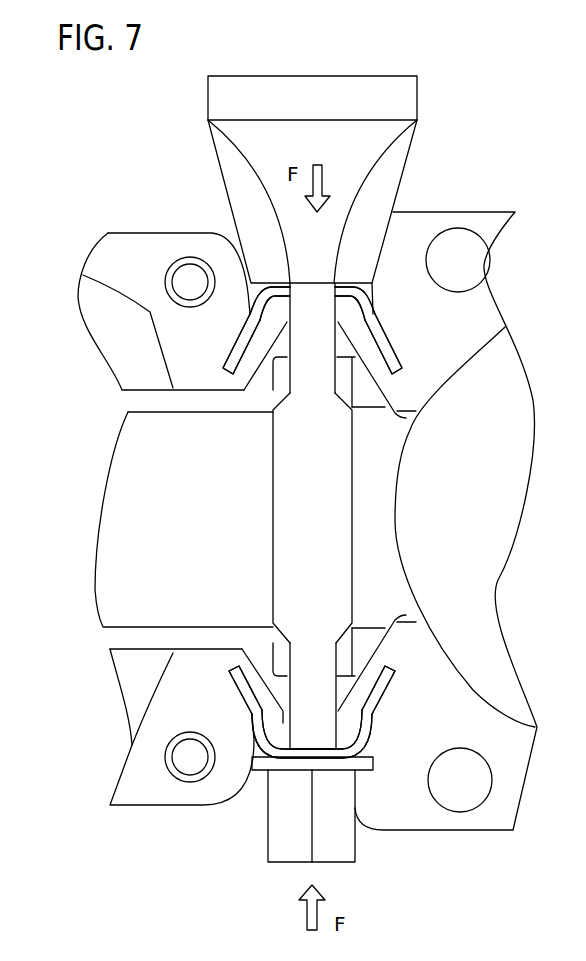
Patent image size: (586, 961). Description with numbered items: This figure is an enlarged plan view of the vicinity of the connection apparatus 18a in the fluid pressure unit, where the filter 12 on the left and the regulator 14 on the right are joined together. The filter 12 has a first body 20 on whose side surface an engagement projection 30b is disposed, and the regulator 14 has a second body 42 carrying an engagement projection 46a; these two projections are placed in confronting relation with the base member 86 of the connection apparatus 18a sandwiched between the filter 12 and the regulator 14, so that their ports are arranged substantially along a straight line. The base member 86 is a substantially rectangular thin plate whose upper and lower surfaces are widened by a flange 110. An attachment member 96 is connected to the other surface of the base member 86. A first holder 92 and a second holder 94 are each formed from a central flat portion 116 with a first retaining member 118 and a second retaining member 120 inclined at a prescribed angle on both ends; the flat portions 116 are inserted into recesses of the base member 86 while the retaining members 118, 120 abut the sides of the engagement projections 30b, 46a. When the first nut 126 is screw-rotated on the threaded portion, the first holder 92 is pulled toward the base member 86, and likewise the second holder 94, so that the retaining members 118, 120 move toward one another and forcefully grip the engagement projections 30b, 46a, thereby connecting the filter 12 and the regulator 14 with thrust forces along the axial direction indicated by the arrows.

The attachment member 96 is at (294, 86).
The connection apparatus 18a is at (430, 101).
The filter 12 is at (72, 286).
The regulator 14 is at (498, 284).
The second body 42 is at (498, 521).
The first body 20 is at (108, 604).
The flange 110 is at (297, 493).
The base member 86 is at (272, 531).
The second holder 94 is at (410, 352).
The first holder 92 is at (384, 722).
The flat portion 116 is at (277, 291).
The first retaining member 118 is at (253, 357).
The second retaining member 120 is at (367, 343).
The engagement projection 30b is at (260, 383).
The engagement projection 46a is at (373, 397).
The first nut 126 is at (270, 832).